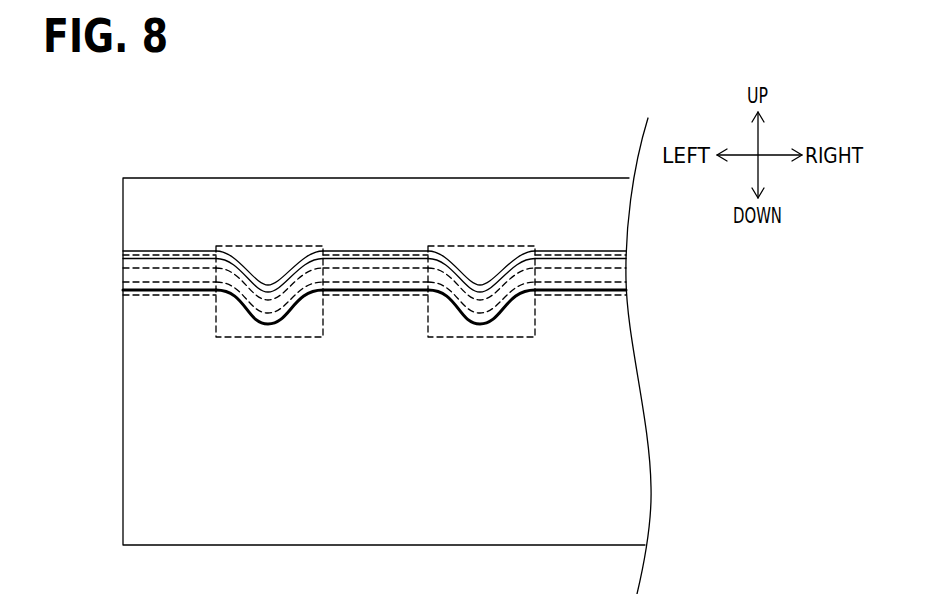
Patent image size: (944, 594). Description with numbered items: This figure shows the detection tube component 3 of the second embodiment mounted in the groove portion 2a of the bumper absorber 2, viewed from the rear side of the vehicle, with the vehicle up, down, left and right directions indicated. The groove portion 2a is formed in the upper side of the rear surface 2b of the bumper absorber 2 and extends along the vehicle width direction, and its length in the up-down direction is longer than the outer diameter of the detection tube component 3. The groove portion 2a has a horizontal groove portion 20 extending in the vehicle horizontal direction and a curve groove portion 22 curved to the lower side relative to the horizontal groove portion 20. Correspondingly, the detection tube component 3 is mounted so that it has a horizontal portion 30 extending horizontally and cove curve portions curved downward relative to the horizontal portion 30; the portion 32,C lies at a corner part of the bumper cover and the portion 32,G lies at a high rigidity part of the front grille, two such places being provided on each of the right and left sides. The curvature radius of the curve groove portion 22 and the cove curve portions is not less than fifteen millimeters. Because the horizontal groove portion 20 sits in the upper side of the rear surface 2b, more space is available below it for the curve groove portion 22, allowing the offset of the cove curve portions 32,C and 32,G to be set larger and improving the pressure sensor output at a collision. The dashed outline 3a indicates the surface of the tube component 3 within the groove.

The bumper absorber 2 is at (555, 178).
The groove portion 2a is at (613, 284).
The rear surface 2b is at (633, 470).
The detection tube component 3 is at (366, 258).
The surface of semiconductor layer 3a is at (182, 268).
The horizontal groove portion 20 is at (148, 251).
The curve groove portion 22 is at (267, 325).
The horizontal portion 30 is at (177, 295).
The cove curve portion at corner part 32,C is at (271, 246).
The cove curve portion at high rigidity part 32,G is at (483, 246).